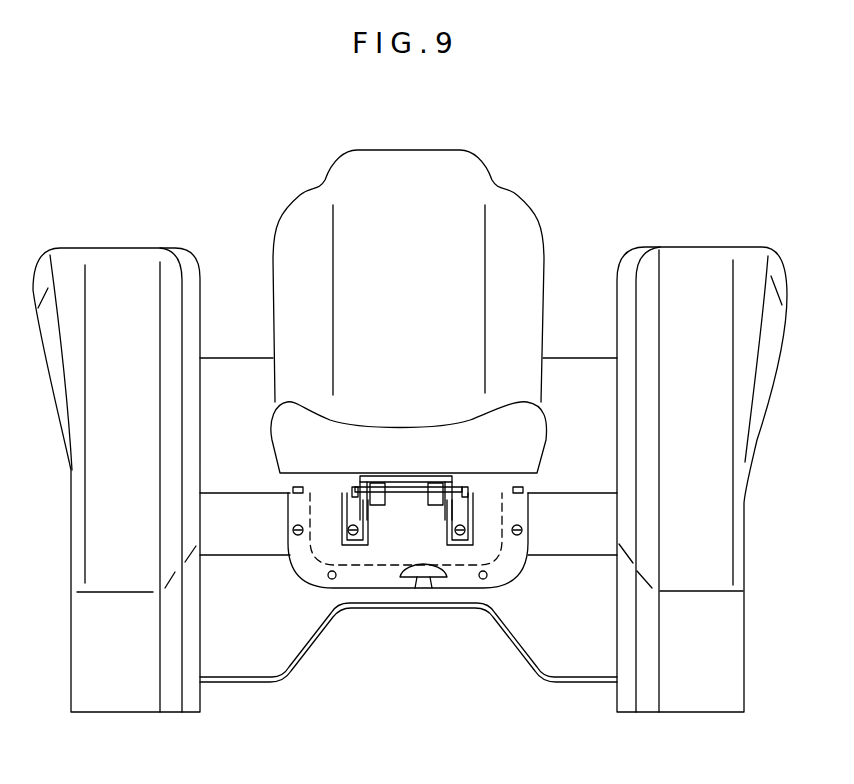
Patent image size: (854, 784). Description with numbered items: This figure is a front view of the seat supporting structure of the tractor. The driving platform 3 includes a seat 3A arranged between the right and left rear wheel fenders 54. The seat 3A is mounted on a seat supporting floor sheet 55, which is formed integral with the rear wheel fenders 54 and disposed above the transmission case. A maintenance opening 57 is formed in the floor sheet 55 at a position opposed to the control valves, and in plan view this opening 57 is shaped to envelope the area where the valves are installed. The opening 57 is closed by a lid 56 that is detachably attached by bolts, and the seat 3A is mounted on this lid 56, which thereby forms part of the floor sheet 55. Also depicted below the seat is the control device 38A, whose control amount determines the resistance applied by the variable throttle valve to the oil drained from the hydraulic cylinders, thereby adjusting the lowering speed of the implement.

The driving platform 3 is at (400, 305).
The seat 3A is at (504, 200).
The rear wheel fenders 54 is at (115, 252).
The seat supporting floor sheet 55 is at (583, 498).
The lid 56 is at (318, 493).
The maintenance opening 57 is at (497, 492).
The control device 38A is at (425, 577).